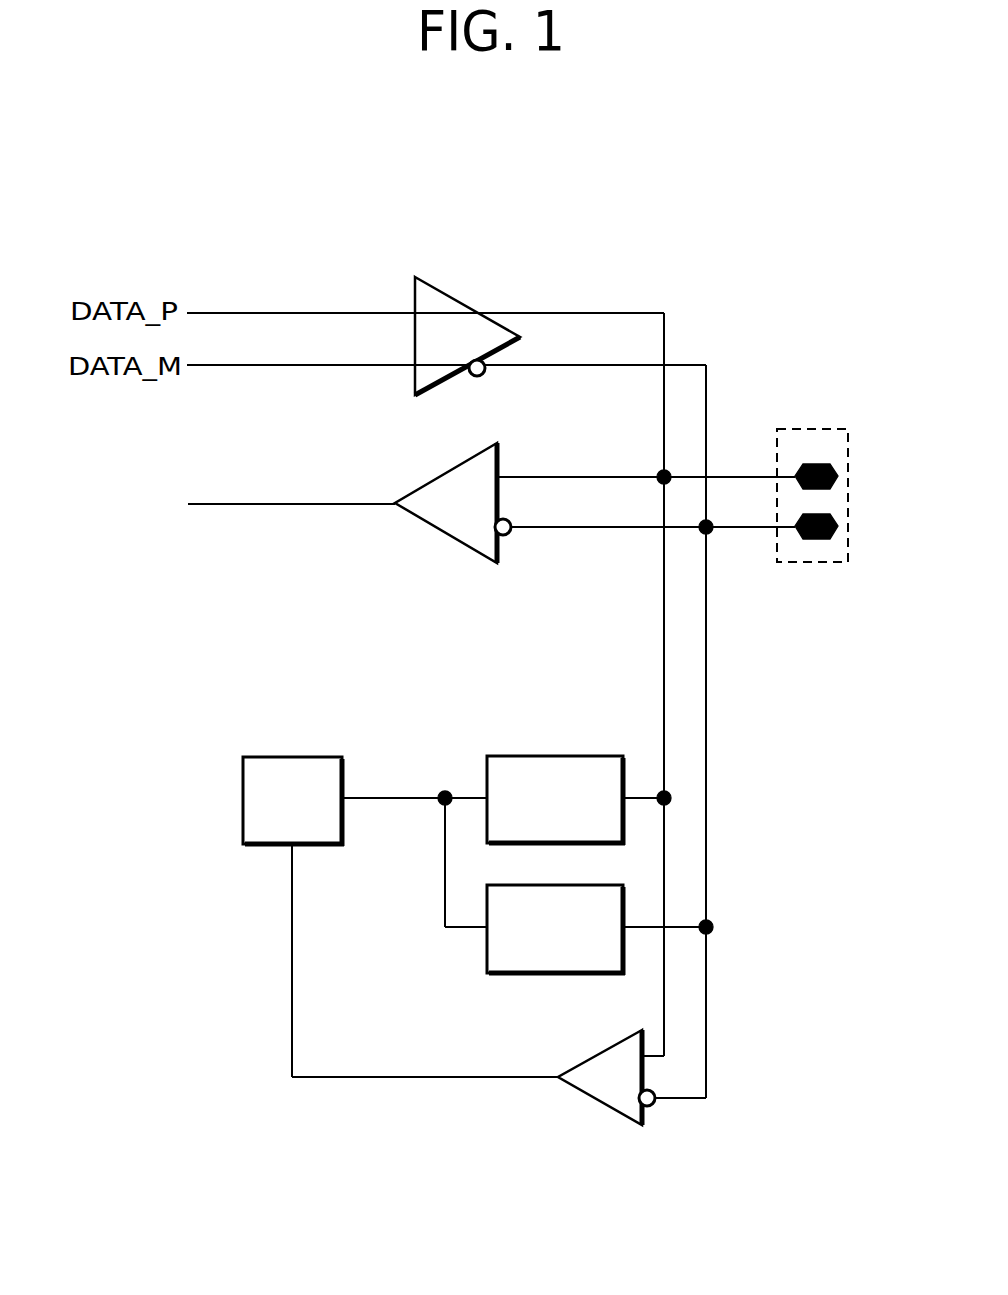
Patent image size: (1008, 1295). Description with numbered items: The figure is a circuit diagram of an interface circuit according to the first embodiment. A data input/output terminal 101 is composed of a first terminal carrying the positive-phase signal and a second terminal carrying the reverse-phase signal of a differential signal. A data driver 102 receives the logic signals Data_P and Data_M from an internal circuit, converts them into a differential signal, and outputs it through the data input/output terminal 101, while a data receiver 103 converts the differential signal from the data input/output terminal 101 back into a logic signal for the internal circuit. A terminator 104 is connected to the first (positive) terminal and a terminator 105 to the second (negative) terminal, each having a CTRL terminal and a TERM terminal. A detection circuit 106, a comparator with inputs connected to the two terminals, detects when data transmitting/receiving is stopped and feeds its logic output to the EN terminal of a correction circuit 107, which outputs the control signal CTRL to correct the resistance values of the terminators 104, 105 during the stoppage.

The data input/output terminal 101 is at (822, 428).
The data driver 102 is at (456, 296).
The data receiver 103 is at (443, 536).
The terminator 104 is at (556, 756).
The terminator 105 is at (524, 976).
The detection circuit 106 is at (598, 1100).
The correction circuit 107 is at (306, 757).